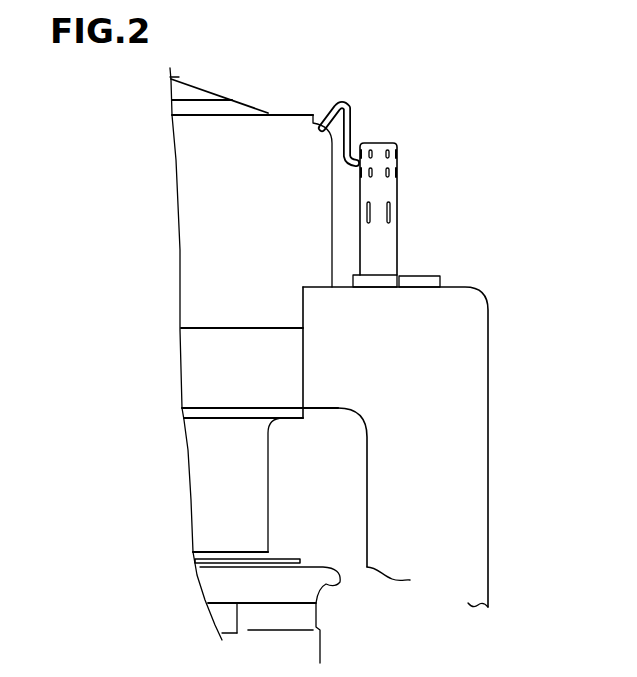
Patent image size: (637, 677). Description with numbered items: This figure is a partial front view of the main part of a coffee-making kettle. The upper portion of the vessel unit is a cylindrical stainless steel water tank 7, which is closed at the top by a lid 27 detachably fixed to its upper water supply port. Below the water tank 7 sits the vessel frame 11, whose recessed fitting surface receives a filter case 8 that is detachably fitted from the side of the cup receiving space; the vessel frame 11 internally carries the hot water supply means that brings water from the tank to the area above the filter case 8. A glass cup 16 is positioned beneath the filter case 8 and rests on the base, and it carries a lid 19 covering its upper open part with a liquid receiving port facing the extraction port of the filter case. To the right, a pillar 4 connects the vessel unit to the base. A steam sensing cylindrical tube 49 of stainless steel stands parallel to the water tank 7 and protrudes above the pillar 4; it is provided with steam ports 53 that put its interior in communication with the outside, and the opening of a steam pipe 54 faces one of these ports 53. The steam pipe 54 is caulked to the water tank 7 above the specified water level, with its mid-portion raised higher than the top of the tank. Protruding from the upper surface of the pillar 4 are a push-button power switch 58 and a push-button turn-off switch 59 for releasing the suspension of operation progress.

The pillar 4 is at (488, 360).
The water tank 7 is at (242, 130).
The filter case 8 is at (202, 483).
The vessel frame 11 is at (188, 367).
The glass cup 16 is at (210, 583).
The lid 19 is at (195, 557).
The lid 27 is at (205, 89).
The steam sensing cylindrical tube 49 is at (397, 237).
The steam ports 53 is at (397, 173).
The steam pipe 54 is at (335, 99).
The push-button power switch 58 is at (437, 280).
The push-button turn-off switch 59 is at (382, 277).